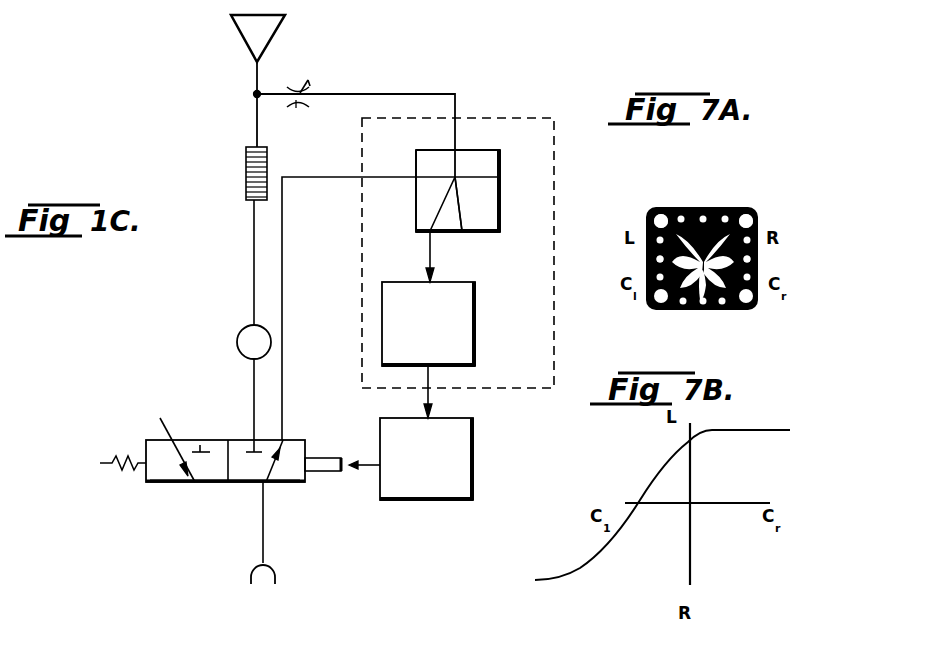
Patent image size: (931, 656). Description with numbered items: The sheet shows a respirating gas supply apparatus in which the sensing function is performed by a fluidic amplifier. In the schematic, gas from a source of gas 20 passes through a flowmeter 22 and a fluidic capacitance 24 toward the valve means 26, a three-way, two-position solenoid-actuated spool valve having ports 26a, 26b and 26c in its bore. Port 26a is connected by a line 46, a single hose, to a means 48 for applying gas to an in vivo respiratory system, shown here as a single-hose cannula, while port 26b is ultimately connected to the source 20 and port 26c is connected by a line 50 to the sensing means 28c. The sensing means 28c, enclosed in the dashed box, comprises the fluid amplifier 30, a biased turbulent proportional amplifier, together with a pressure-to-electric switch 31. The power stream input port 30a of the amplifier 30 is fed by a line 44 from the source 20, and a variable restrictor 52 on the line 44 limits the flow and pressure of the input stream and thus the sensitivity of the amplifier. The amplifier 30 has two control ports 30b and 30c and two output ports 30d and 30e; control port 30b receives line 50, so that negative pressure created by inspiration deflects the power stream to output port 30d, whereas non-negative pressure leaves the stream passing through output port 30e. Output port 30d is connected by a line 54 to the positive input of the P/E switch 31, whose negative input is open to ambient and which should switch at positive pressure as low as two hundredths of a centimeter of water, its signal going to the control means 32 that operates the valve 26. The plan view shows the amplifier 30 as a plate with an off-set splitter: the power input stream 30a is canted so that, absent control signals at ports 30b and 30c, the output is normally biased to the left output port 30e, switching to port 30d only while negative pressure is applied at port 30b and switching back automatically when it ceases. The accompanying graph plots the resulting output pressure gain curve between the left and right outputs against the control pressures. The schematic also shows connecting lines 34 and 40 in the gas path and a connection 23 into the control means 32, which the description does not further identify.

In FIG. 1C, the source of gas 20 is at (276, 30).
In FIG. 1C, the flowmeter 22 is at (245, 176).
In FIG. 1C, the control signal line 23 is at (360, 470).
In FIG. 1C, the fluidic capacitance 24 is at (236, 340).
In FIG. 1C, the valve means 26 is at (146, 482).
In FIG. 1C, the port 26a is at (195, 482).
In FIG. 1C, the port 26b is at (250, 440).
In FIG. 1C, the port 26c is at (200, 445).
In FIG. 1C, the sensing means 28c is at (497, 118).
In FIG. 1C, the fluid amplifier 30 is at (501, 205).
In FIG. 7A, the fluid amplifier 30 is at (756, 180).
In FIG. 1C, the power stream input port 30a is at (458, 150).
In FIG. 7A, the power stream input port 30a is at (703, 310).
In FIG. 1C, the control port 30b is at (415, 177).
In FIG. 7A, the control port 30b is at (759, 270).
In FIG. 1C, the control port 30c is at (500, 177).
In FIG. 7A, the control port 30c is at (646, 268).
In FIG. 1C, the output port 30d is at (420, 233).
In FIG. 7A, the output port 30d is at (758, 220).
In FIG. 1C, the output port 30e is at (462, 232).
In FIG. 7A, the output port 30e is at (652, 222).
In FIG. 1C, the pressure-to-electric switch 31 is at (476, 340).
In FIG. 1C, the control means 32 is at (405, 500).
In FIG. 1C, the signal line from antenna 34 is at (255, 124).
In FIG. 1C, the amplifier output line 40 is at (252, 393).
In FIG. 1C, the line 44 is at (410, 94).
In FIG. 1C, the line 46 is at (264, 528).
In FIG. 1C, the means for applying gas to an in vivo respiratory system 48 is at (273, 568).
In FIG. 1C, the line 50 is at (283, 248).
In FIG. 1C, the variable restrictor 52 is at (321, 79).
In FIG. 1C, the line 54 is at (431, 257).